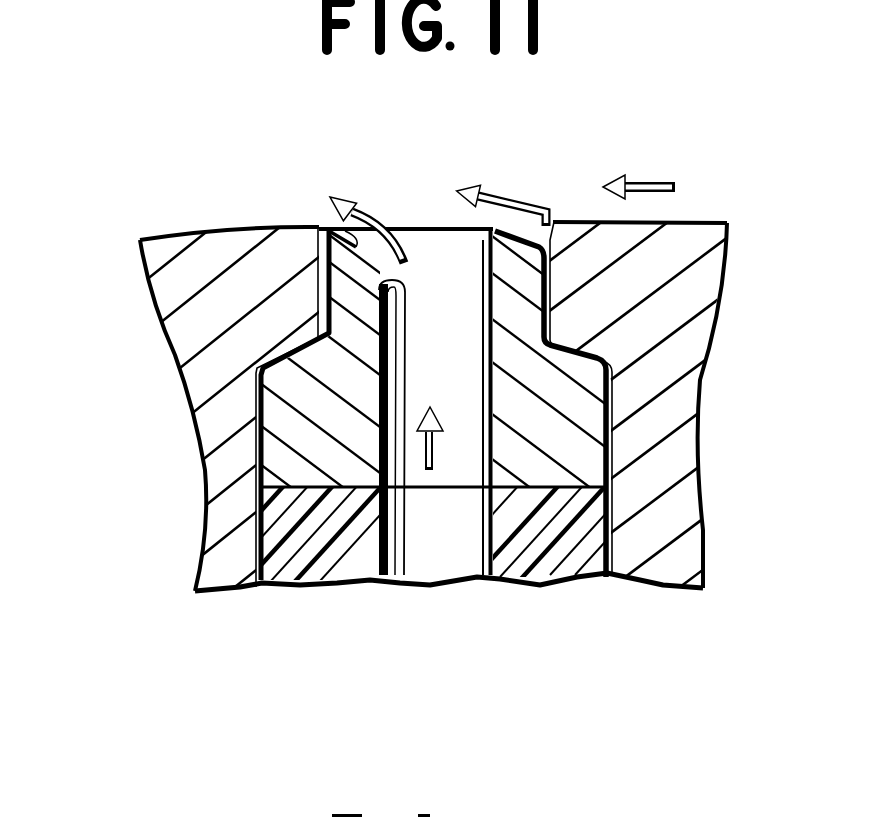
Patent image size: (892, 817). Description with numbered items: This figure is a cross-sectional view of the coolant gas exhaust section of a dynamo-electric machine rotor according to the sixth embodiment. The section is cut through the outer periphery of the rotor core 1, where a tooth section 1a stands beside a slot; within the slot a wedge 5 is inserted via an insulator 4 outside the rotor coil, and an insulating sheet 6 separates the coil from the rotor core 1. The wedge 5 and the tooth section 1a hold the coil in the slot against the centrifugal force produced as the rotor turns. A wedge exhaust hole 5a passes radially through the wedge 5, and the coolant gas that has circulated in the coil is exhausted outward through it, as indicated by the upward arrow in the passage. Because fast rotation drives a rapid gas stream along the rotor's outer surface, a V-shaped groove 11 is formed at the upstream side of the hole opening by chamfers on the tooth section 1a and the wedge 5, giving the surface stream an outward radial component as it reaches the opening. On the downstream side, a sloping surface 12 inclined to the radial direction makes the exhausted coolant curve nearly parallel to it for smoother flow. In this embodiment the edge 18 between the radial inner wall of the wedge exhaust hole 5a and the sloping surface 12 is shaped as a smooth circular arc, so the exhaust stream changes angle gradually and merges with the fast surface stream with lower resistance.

The rotor core 1 is at (218, 265).
The tooth section 1a is at (675, 253).
The insulator 4 is at (290, 527).
The wedge 5 is at (318, 392).
The wedge exhaust hole 5a is at (463, 447).
The insulating sheet 6 is at (258, 562).
The V-shaped groove 11 is at (550, 238).
The sloping surface 12 is at (352, 248).
The edge 18 is at (379, 318).